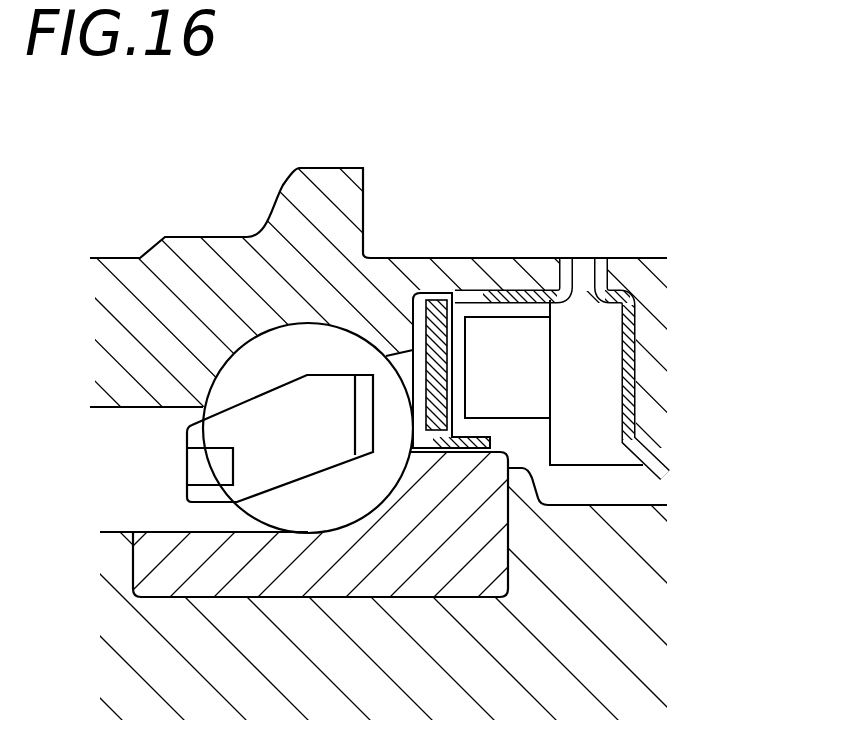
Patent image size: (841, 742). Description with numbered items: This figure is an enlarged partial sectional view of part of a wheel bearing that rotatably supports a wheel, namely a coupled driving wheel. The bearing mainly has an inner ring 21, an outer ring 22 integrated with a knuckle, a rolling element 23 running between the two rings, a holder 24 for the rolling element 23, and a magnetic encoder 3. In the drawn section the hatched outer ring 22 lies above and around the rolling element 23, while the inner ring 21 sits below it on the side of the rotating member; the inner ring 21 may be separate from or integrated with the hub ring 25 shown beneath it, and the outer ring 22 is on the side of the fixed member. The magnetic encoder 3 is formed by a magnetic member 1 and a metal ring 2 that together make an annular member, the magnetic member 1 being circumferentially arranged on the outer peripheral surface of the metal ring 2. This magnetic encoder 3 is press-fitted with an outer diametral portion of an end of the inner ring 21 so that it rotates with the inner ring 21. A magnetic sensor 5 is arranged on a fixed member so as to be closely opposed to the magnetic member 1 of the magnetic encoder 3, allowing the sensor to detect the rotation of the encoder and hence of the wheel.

The magnetic member 1 is at (452, 312).
The metal ring 2 is at (424, 308).
The magnetic encoder 3 is at (442, 298).
The magnetic sensor 5 is at (520, 373).
The inner ring 21 is at (510, 553).
The outer ring 22 is at (151, 287).
The rolling element 23 is at (289, 352).
The holder 24 is at (257, 418).
The hub ring 25 is at (603, 664).